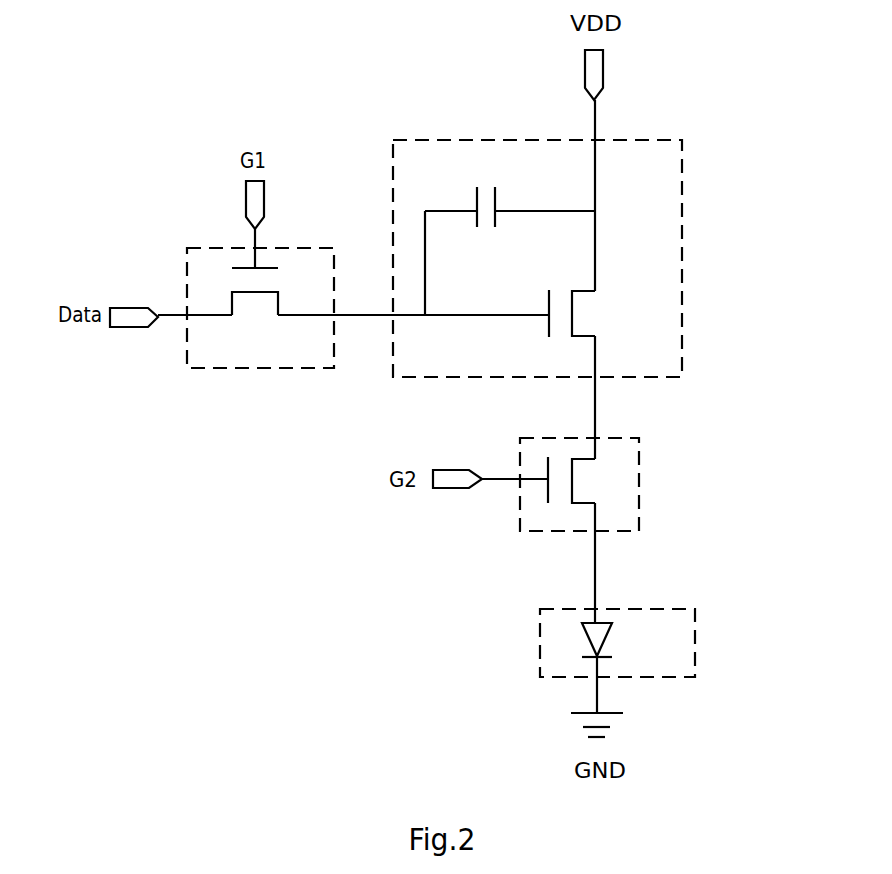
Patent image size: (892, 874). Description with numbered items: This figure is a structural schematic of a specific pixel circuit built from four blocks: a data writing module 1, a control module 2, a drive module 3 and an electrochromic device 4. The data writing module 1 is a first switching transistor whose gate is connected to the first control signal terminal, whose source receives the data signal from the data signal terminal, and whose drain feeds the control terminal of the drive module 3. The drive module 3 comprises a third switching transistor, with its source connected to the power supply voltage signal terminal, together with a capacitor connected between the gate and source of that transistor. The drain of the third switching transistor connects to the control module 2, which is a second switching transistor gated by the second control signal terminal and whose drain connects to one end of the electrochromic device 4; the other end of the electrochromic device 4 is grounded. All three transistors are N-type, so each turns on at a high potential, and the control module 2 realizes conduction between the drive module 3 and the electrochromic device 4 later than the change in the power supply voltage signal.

The data writing module 1 is at (287, 248).
The control module 2 is at (640, 488).
The drive module 3 is at (645, 140).
The electrochromic device 4 is at (680, 609).